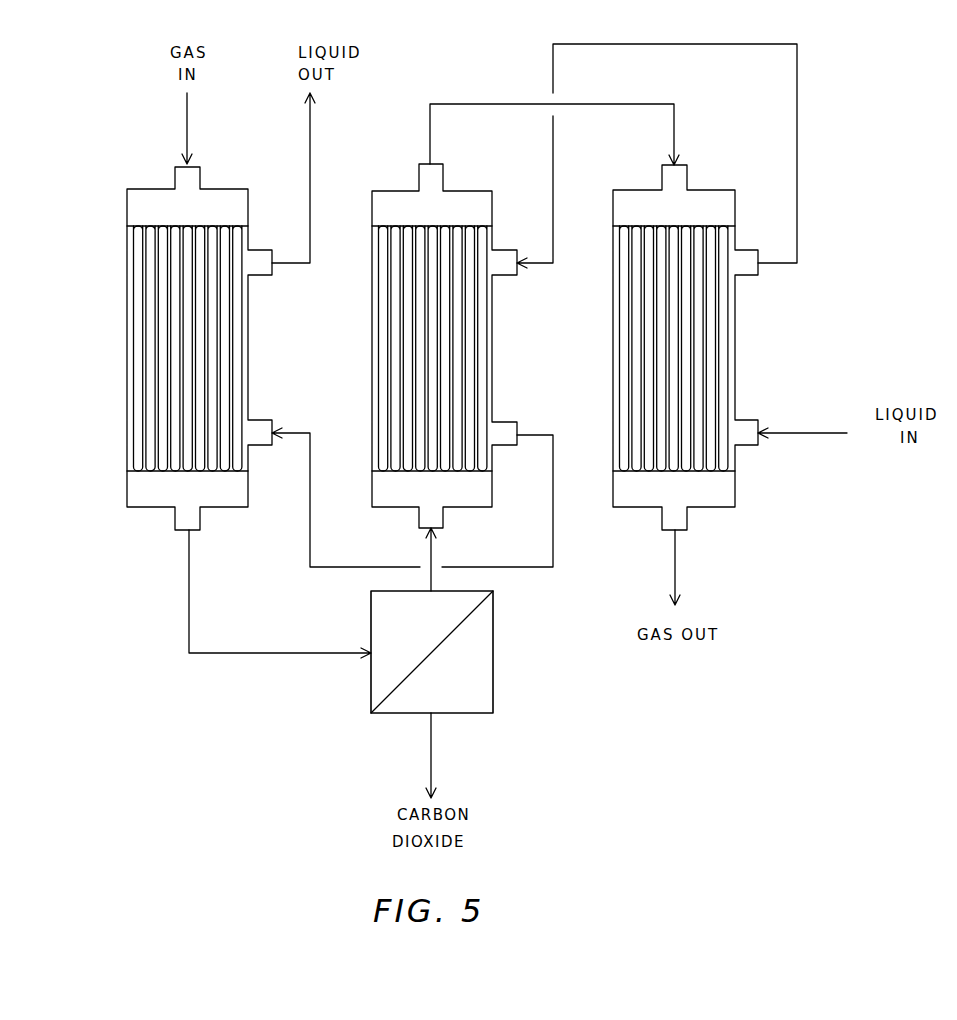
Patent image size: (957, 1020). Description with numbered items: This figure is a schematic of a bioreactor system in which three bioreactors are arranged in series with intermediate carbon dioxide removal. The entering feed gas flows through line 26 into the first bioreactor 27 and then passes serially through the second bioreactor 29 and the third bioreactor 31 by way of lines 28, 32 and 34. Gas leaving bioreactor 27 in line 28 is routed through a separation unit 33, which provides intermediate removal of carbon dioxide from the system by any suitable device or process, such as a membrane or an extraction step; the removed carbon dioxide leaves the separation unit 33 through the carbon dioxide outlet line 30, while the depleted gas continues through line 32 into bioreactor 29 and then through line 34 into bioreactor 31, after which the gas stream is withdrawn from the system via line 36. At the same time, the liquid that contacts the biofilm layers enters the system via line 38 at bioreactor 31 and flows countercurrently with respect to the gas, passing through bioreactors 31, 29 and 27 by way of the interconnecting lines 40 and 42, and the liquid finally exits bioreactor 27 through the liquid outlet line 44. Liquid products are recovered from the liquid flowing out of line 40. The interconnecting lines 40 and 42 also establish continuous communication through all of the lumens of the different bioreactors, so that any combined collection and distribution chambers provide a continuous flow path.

The line 26 is at (202, 128).
The bioreactor 27 is at (127, 355).
The line 28 is at (280, 607).
The bioreactor 29 is at (372, 340).
The carbon dioxide outlet line 30 is at (448, 755).
The bioreactor 31 is at (613, 340).
The line 32 is at (447, 559).
The separation unit 33 is at (495, 643).
The line 34 is at (568, 134).
The line 36 is at (698, 567).
The line 38 is at (802, 453).
The line 40 is at (657, 168).
The line 42 is at (412, 497).
The liquid outlet line 44 is at (311, 178).